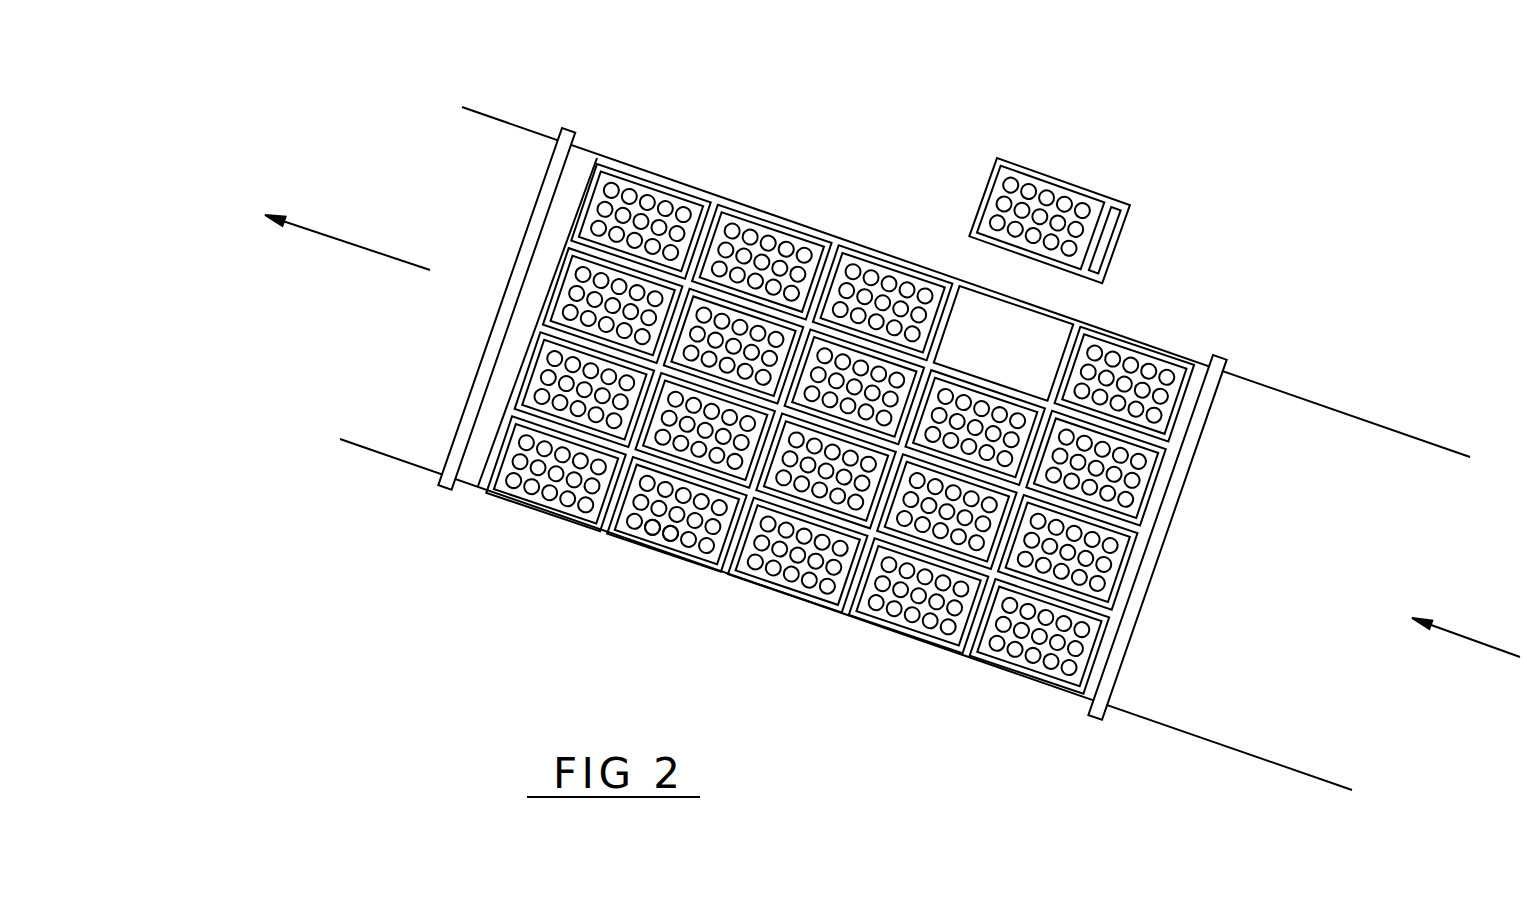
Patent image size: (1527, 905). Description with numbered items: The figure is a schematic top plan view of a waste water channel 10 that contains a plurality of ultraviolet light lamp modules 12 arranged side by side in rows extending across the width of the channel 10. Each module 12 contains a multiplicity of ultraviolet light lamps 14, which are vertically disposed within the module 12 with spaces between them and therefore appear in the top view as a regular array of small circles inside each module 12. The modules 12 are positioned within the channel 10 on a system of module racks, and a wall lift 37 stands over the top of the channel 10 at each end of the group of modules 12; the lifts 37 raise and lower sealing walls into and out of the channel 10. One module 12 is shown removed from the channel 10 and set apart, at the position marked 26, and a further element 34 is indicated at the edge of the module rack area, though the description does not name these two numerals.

The waste water channel 10 is at (1290, 596).
The ultraviolet light lamp module 12 is at (782, 583).
The ultraviolet light lamp 14 is at (663, 535).
The tray 26 is at (1053, 174).
The tray carrier 34 is at (543, 305).
The wall lift 37 is at (492, 327).